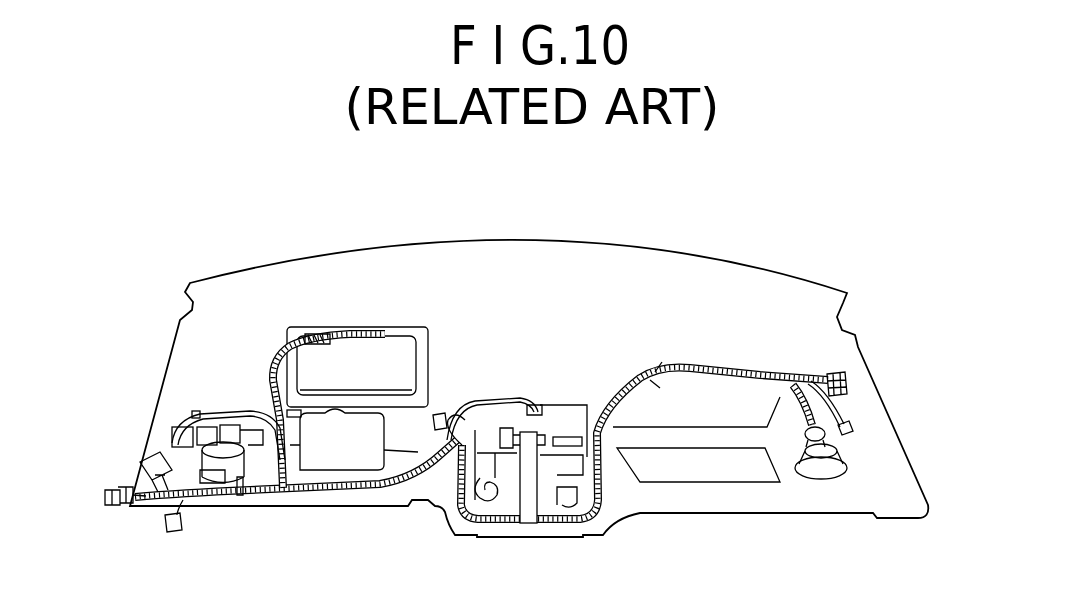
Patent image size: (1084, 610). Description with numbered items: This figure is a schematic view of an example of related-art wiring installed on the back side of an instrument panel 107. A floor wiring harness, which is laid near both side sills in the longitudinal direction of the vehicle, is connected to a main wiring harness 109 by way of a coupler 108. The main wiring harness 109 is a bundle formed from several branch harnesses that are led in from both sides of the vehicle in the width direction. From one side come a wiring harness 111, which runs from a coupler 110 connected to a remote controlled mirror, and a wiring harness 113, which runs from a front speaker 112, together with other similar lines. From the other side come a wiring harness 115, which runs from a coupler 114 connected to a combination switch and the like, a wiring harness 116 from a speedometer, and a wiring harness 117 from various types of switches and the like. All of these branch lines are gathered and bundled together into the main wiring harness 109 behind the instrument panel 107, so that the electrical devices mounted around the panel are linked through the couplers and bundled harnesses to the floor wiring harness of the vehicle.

The instrument panel 107 is at (652, 250).
The coupler 108 is at (857, 372).
The main wiring harness 109 is at (713, 373).
The coupler 110 is at (853, 428).
The wiring harness 111 is at (834, 412).
The front speaker 112 is at (835, 479).
The wiring harness 113 is at (787, 435).
The coupler 114 is at (118, 482).
The wiring harness 115 is at (155, 500).
The wiring harness 116 is at (265, 357).
The wiring harness 117 is at (228, 410).